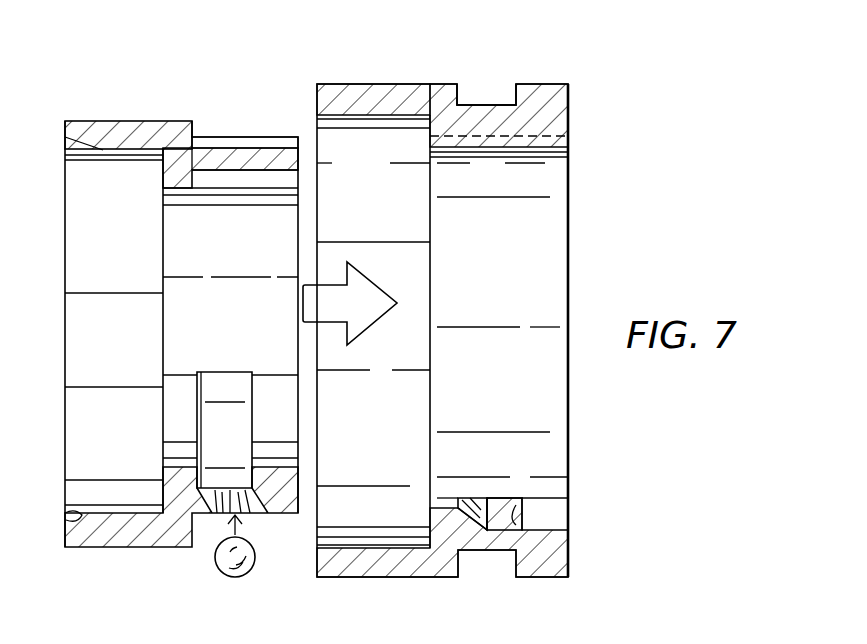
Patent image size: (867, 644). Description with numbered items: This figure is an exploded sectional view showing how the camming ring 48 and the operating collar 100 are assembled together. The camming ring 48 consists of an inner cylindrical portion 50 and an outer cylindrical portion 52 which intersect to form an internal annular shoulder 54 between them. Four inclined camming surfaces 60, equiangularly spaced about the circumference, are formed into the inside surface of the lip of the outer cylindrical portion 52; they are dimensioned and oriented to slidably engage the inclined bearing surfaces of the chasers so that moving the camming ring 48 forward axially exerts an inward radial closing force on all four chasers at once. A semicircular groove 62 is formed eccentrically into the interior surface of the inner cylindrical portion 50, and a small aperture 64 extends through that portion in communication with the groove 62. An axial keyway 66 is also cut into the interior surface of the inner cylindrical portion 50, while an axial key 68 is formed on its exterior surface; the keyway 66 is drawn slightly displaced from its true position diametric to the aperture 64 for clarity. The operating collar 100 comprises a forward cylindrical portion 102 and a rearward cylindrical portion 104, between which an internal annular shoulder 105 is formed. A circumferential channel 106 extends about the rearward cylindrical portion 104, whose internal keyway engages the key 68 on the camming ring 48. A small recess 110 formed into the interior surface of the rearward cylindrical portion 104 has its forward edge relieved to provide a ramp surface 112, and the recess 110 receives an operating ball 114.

The camming ring 48 is at (203, 340).
The inner cylindrical portion 50 is at (261, 153).
The outer cylindrical portion 52 is at (127, 121).
The internal annular shoulder 54 is at (165, 183).
The inclined camming surfaces 60 is at (78, 150).
The semicircular groove 62 is at (208, 440).
The small aperture 64 is at (258, 502).
The axial keyway 66 is at (278, 172).
The axial key 68 is at (221, 137).
The operating collar 100 is at (492, 318).
The forward cylindrical portion 102 is at (388, 95).
The rearward cylindrical portion 104 is at (490, 118).
The internal annular shoulder 105 is at (433, 222).
The circumferential channel 106 is at (505, 95).
The small recess 110 is at (522, 500).
The ramp surface 112 is at (477, 512).
The operating ball 114 is at (220, 565).